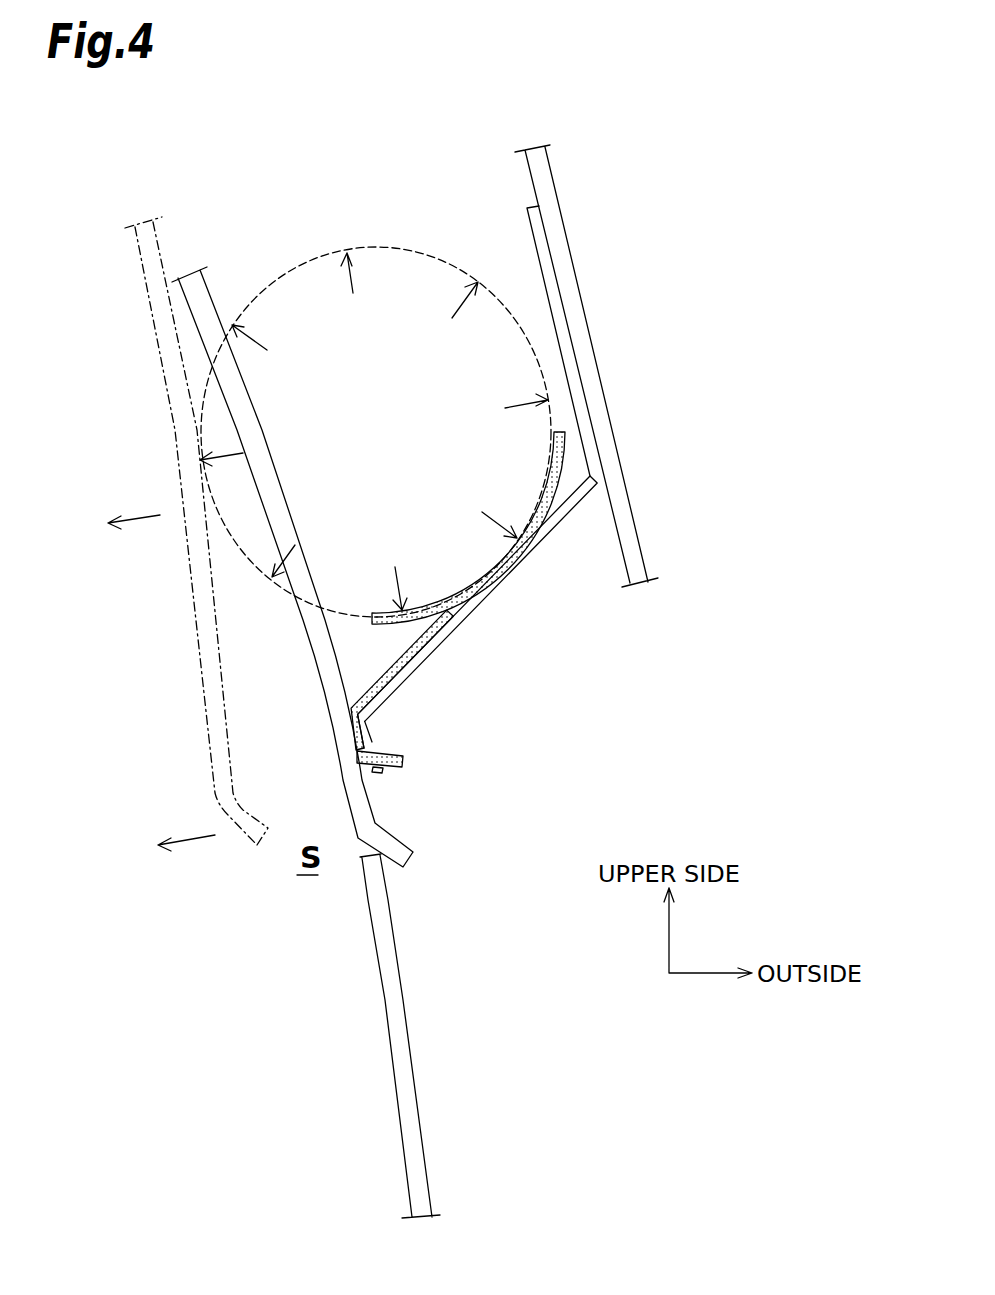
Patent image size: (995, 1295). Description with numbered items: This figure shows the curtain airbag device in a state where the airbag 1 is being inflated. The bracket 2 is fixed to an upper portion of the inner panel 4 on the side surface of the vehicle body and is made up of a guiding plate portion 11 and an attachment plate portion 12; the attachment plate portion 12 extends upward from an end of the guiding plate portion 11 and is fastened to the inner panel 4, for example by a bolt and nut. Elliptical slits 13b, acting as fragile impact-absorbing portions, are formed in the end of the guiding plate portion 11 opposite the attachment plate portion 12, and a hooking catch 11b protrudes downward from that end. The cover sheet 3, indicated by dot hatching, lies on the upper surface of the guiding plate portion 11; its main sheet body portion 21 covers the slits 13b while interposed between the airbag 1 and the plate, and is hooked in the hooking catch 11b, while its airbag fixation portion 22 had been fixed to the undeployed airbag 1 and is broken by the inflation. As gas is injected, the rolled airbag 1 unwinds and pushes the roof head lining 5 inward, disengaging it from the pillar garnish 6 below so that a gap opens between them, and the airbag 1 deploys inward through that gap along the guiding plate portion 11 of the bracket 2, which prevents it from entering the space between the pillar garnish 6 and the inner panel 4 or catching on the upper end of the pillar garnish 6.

The airbag 1 is at (322, 257).
The bracket 2 is at (484, 658).
The cover sheet 3 is at (466, 585).
The inner panel 4 is at (583, 303).
The roof head lining 5 is at (200, 595).
The pillar garnish 6 is at (395, 1055).
The guiding plate portion 11 is at (492, 600).
The hooking catch 11b is at (378, 777).
The attachment plate portion 12 is at (532, 240).
The slit 13b is at (417, 678).
The main sheet body portion 21 is at (405, 654).
The airbag fixation portion 22 is at (557, 474).